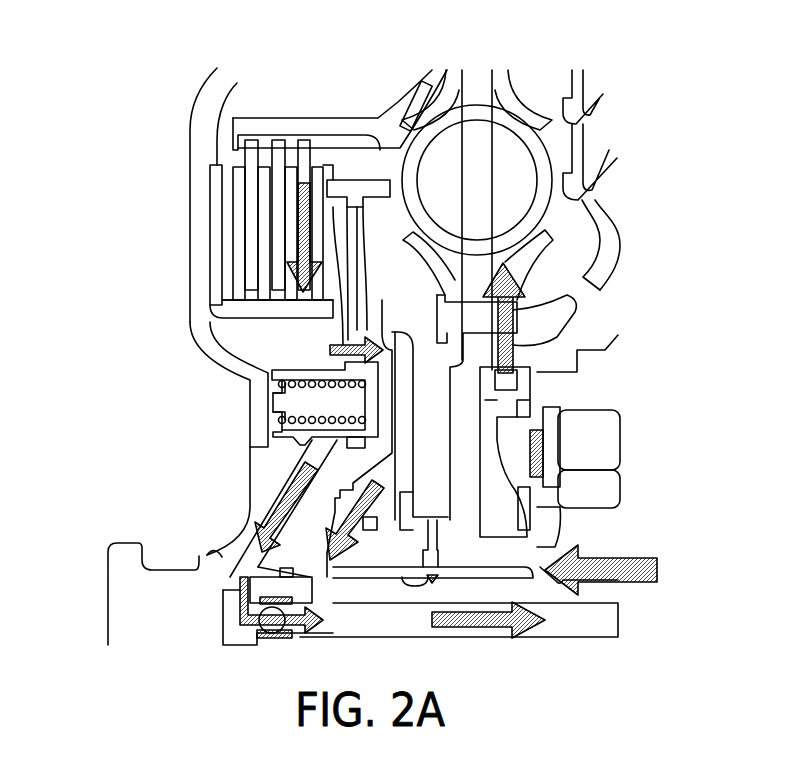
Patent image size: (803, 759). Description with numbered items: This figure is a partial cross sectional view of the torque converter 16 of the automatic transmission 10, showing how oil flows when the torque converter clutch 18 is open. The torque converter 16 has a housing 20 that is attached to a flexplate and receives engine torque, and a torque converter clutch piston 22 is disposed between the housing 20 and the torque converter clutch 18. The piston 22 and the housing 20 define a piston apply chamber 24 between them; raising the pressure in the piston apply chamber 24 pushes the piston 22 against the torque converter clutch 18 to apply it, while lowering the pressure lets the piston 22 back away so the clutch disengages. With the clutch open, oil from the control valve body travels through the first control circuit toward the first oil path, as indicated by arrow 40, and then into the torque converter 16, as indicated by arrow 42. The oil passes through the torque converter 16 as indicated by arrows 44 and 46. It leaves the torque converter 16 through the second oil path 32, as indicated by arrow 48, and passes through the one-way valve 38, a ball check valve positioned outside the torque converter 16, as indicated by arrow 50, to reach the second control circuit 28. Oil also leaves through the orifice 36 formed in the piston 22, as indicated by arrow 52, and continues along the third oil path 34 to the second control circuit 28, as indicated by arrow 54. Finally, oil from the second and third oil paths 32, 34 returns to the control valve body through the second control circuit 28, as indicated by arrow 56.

The automatic transmission 10 is at (100, 387).
The torque converter 16 is at (186, 147).
The torque converter clutch 18 is at (255, 180).
The housing 20 is at (207, 112).
The torque converter clutch piston 22 is at (350, 333).
The piston apply chamber 24 is at (383, 417).
The second control circuit 28 is at (600, 620).
The second oil path 32 is at (252, 558).
The third oil path 34 is at (262, 550).
The orifice 36 is at (273, 378).
The one-way valve 38 is at (272, 638).
The arrow 40 is at (628, 563).
The arrow 42 is at (579, 575).
The arrow 44 is at (517, 317).
The arrow 46 is at (302, 232).
The arrow 48 is at (290, 495).
The arrow 50 is at (240, 600).
The arrow 52 is at (333, 347).
The arrow 54 is at (335, 540).
The arrow 56 is at (470, 622).